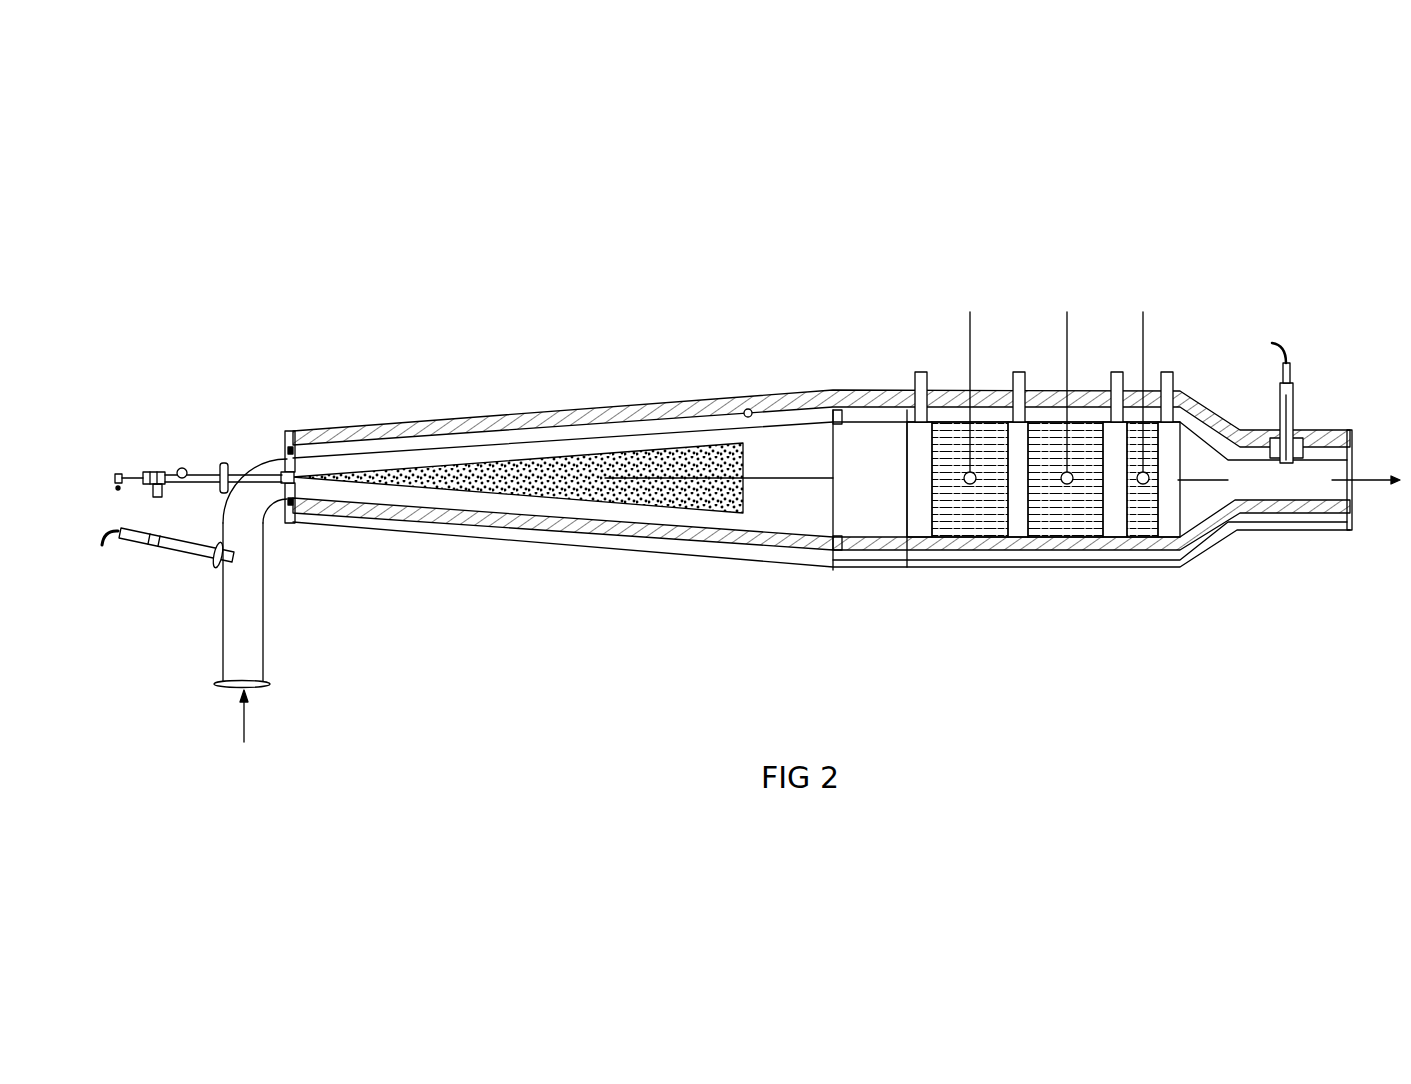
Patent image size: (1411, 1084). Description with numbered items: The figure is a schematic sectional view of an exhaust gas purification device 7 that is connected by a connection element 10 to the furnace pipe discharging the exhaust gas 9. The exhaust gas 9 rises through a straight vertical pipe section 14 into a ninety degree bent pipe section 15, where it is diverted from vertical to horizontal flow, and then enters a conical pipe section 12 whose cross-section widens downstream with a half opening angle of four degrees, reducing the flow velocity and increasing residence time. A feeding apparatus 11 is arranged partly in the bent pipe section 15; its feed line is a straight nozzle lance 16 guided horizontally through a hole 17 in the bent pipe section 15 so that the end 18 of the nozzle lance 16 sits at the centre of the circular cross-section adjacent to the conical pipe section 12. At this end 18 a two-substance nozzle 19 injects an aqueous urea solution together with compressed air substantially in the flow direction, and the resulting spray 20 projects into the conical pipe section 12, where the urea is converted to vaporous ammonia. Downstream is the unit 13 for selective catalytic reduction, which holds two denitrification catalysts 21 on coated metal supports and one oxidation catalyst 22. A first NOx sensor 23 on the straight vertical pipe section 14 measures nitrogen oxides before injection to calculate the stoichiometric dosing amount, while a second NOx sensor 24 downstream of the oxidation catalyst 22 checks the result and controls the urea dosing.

The exhaust gas purification device 7 is at (892, 248).
The exhaust gas 9 is at (246, 722).
The connection element 10 is at (234, 688).
The feeding apparatus 11 is at (118, 452).
The conical pipe section 12 is at (556, 411).
The unit for selective catalytic reduction 13 is at (1062, 582).
The straight vertical pipe section 14 is at (238, 598).
The bent pipe section 15 is at (262, 508).
The nozzle lance 16 is at (150, 483).
The hole 17 is at (250, 470).
The end of the nozzle lance 18 is at (270, 460).
The two-substance nozzle 19 is at (298, 432).
The spray 20 is at (656, 515).
The denitrification catalysts 21 is at (1062, 441).
The oxidation catalyst 22 is at (1143, 446).
The first NOx sensor 23 is at (167, 552).
The second NOx sensor 24 is at (1296, 410).